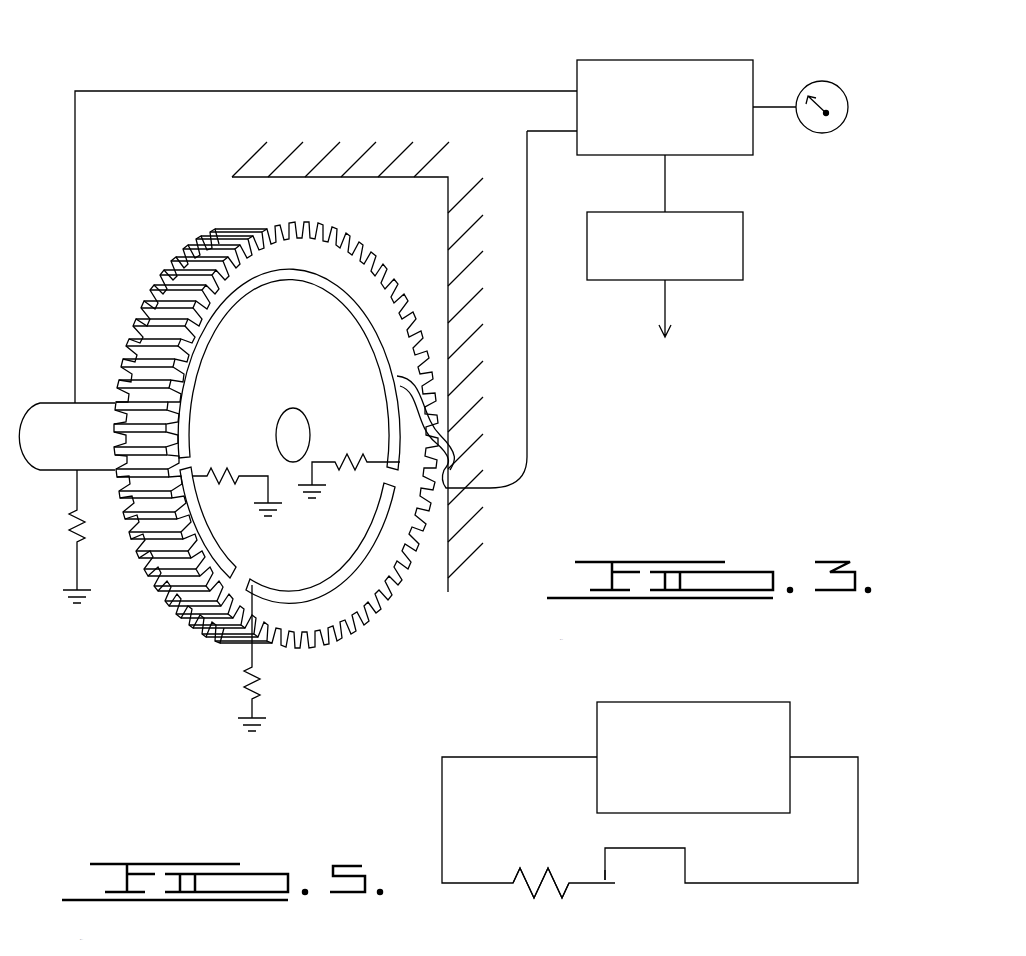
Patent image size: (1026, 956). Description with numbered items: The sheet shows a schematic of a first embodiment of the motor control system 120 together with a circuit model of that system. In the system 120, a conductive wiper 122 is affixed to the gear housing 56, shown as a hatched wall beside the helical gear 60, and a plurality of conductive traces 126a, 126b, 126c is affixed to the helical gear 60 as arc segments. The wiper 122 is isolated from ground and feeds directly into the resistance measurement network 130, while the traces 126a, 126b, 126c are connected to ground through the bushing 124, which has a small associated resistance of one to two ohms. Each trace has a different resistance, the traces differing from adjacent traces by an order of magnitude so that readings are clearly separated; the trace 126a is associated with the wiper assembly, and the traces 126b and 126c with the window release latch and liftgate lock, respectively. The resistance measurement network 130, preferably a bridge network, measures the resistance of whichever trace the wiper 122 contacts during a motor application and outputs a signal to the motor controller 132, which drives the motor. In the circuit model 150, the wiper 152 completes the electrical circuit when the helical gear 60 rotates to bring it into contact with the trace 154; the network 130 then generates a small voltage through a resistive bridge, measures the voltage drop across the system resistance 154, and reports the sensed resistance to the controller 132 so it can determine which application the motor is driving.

In FIG. 3, the gear housing 56 is at (352, 148).
In FIG. 3, the helical gear 60 is at (306, 352).
In FIG. 3, the motor control system 120 is at (142, 78).
In FIG. 3, the conductive wiper 122 is at (437, 423).
In FIG. 3, the bushing 124 is at (47, 404).
In FIG. 3, the conductive trace 126a is at (238, 292).
In FIG. 3, the conductive trace 126b is at (220, 552).
In FIG. 3, the conductive trace 126c is at (337, 582).
In FIG. 3, the resistance measurement network 130 is at (722, 62).
In FIG. 5, the resistance measurement network 130 is at (683, 703).
In FIG. 3, the motor controller 132 is at (742, 248).
In FIG. 5, the circuit 150 is at (820, 690).
In FIG. 5, the wiper 152 is at (610, 861).
In FIG. 5, the trace 154 is at (540, 878).